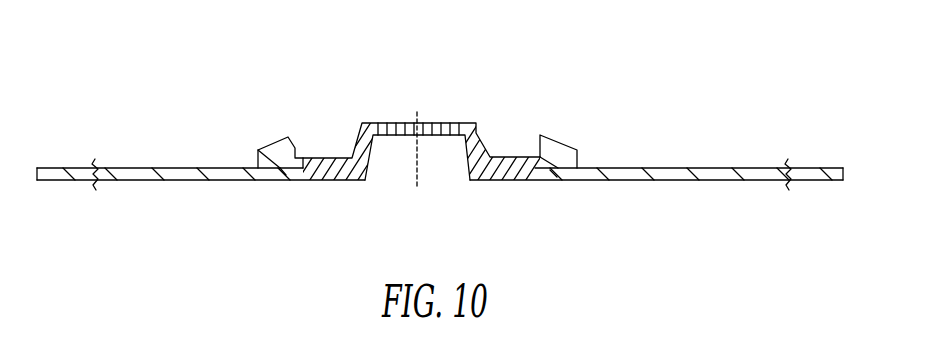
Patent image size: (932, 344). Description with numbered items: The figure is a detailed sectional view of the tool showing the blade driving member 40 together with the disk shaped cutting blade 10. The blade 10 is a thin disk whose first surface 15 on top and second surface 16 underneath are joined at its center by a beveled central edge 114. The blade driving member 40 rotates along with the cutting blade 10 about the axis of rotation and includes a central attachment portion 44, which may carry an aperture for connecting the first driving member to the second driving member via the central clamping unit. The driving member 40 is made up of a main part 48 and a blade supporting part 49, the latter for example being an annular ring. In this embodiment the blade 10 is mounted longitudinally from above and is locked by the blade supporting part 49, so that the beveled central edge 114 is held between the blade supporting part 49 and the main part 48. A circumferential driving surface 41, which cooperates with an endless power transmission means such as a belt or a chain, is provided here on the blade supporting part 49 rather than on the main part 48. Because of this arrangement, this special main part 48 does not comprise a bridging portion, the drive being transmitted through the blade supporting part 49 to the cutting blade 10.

The disk shaped cutting blade 10 is at (700, 193).
The first surface 15 is at (132, 167).
The second surface 16 is at (175, 181).
The blade driving member 40 is at (258, 56).
The circumferential driving surface 41 is at (280, 140).
The central attachment portion 44 is at (392, 196).
The main part 48 is at (463, 108).
The blade supporting part 49 is at (563, 120).
The beveled central edge 114 is at (280, 180).